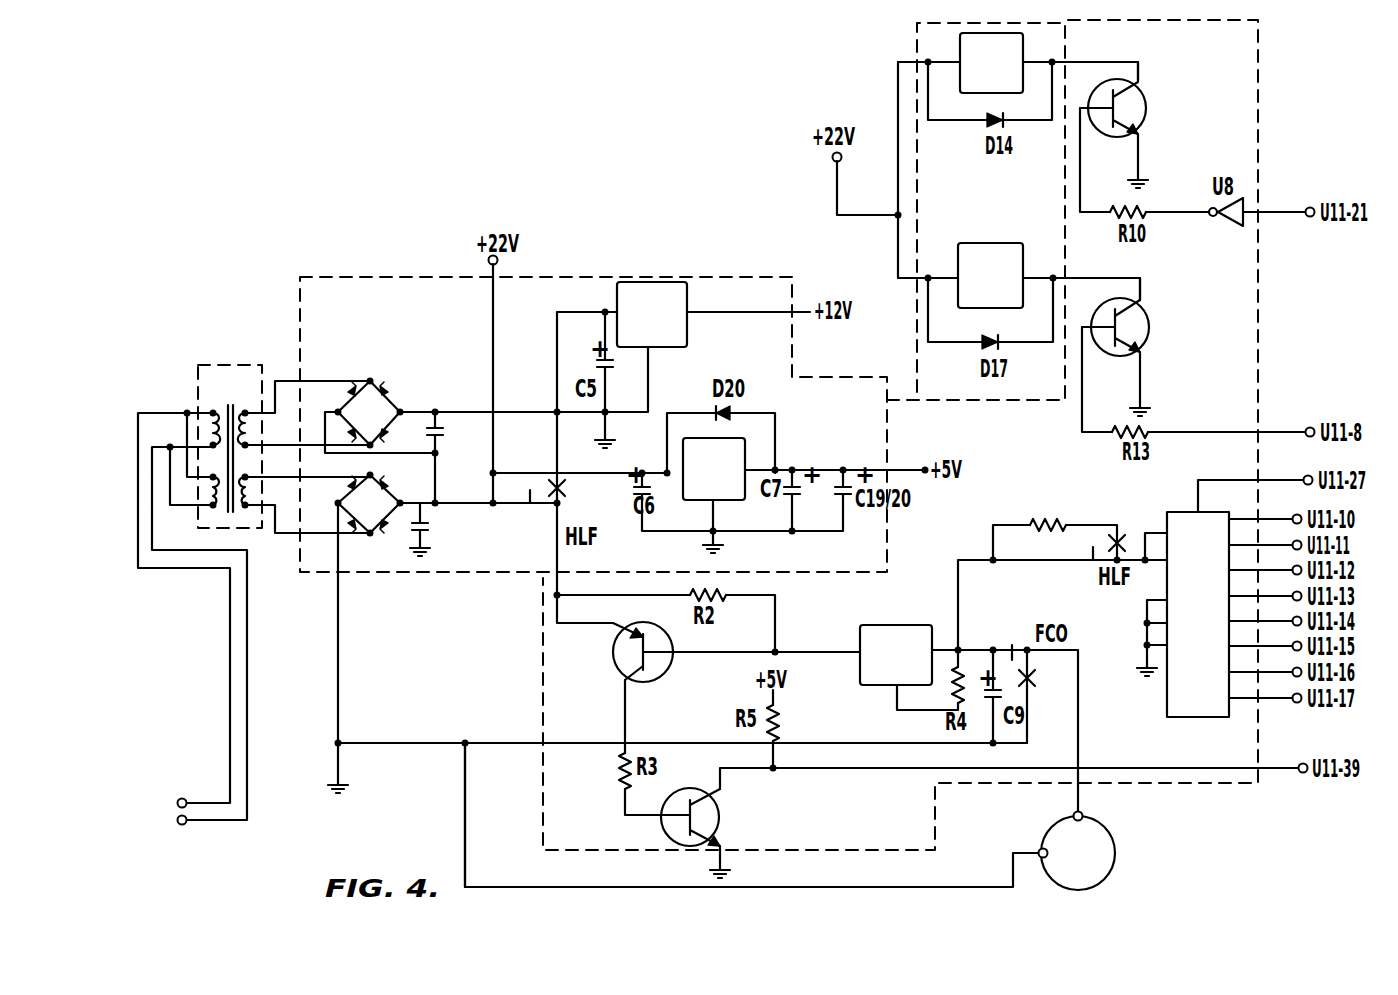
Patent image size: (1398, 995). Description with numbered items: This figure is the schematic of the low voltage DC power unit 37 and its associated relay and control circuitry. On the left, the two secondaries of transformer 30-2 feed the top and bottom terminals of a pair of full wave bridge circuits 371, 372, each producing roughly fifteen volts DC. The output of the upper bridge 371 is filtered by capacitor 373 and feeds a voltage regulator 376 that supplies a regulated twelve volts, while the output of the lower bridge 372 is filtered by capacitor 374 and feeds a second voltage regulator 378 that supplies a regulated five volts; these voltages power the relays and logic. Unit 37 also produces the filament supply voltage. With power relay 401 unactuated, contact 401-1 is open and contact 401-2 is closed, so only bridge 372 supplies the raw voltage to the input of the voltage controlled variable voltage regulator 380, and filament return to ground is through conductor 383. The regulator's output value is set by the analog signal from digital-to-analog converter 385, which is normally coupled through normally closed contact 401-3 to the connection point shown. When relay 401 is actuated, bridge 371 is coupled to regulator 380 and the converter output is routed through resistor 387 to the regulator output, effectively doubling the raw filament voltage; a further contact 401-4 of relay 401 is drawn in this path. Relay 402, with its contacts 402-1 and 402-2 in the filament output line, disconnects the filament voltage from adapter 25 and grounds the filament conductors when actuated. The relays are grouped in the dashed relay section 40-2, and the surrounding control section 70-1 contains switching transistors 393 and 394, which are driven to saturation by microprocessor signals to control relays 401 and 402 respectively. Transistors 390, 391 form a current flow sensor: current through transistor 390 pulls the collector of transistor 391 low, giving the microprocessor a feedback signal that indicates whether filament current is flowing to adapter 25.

The transformer 30-2 is at (202, 366).
The low voltage DC power unit 37 is at (382, 278).
The full wave bridge circuit 371 is at (371, 390).
The full wave bridge circuit 372 is at (371, 498).
The capacitor 373 is at (438, 437).
The capacitor 374 is at (428, 533).
The voltage regulator VR2 376 is at (651, 281).
The second voltage regulator 378 is at (718, 502).
The voltage controlled variable voltage regulator 380 is at (878, 625).
The conductor 383 is at (463, 848).
The digital-to-analog converter 385 is at (1203, 717).
The resistor 387 is at (1040, 520).
The transistor 390 is at (665, 674).
The transistor 391 is at (722, 811).
The transistor 393 is at (1144, 100).
The transistor 394 is at (1144, 315).
The power relay 401 is at (1023, 60).
The relay 402 is at (1006, 243).
The contact 401-1 is at (567, 490).
The contact 401-2 is at (530, 503).
The normally closed contact 401-3 is at (1094, 563).
The HLF jumper 401-4 is at (1122, 537).
The FCO connection point 402-1 is at (1012, 645).
The FCO jumper 402-2 is at (1035, 684).
The signal input section 40-2 is at (913, 48).
The control circuit section 70-1 is at (1260, 100).
The adapter 25 is at (1112, 844).